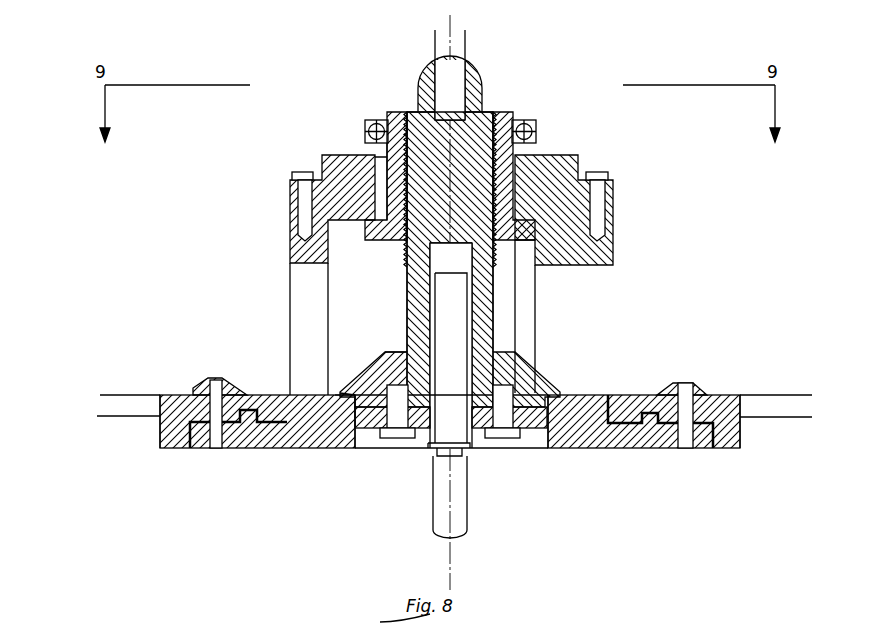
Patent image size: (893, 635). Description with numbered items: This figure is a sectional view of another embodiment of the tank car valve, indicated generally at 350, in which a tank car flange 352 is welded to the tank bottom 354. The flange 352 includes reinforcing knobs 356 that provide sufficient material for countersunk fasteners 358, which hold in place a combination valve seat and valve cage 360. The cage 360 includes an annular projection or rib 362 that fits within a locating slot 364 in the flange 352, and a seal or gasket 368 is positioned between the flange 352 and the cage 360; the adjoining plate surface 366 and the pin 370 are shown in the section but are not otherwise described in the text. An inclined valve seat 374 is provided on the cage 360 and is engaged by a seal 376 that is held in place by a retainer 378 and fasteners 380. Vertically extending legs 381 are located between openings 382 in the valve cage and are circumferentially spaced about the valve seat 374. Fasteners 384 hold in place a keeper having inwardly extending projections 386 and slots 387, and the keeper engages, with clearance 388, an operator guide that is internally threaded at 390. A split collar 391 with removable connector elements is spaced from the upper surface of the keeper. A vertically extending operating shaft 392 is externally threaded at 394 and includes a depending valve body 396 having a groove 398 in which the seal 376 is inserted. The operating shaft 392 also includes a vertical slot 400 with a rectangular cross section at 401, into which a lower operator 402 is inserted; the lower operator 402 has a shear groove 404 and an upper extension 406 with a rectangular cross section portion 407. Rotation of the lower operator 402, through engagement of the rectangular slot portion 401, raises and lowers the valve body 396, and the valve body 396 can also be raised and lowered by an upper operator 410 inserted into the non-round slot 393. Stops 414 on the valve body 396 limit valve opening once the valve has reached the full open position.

The valve embodiment 350 is at (140, 455).
The tank car flange 352 is at (165, 395).
The tank bottom 354 is at (118, 400).
The reinforcing knobs 356 is at (198, 380).
The countersunk fasteners 358 is at (215, 430).
The combination valve seat and valve cage 360 is at (318, 460).
The annular projection or rib 362 is at (668, 418).
The locating slot 364 is at (262, 423).
The plate 366 is at (690, 380).
The seal or gasket 368 is at (185, 432).
The pin 370 is at (243, 418).
The inclined valve seat 374 is at (643, 395).
The seal 376 is at (350, 393).
The retainer 378 is at (405, 445).
The fasteners 380 is at (522, 440).
The vertically extending legs 381 is at (538, 286).
The openings 382 is at (295, 278).
The fasteners 384 is at (300, 192).
The inwardly extending projections 386 is at (352, 157).
The slots 387 is at (370, 155).
The clearance 388 is at (555, 118).
The internal threads 390 is at (405, 112).
The split collar 391 is at (540, 128).
The vertically extending operating shaft 392 is at (468, 172).
The non-round slot 393 is at (452, 110).
The external threads 394 is at (410, 222).
The valve body 396 is at (340, 393).
The groove 398 is at (340, 396).
The vertical slot 400 is at (405, 258).
The rectangular cross section portion 401 is at (478, 400).
The lower operator 402 is at (470, 500).
The shear groove 404 is at (430, 452).
The upper extension 406 is at (388, 365).
The rectangular cross section portion 407 is at (440, 300).
The upper operator 410 is at (465, 62).
The stops 414 is at (397, 345).